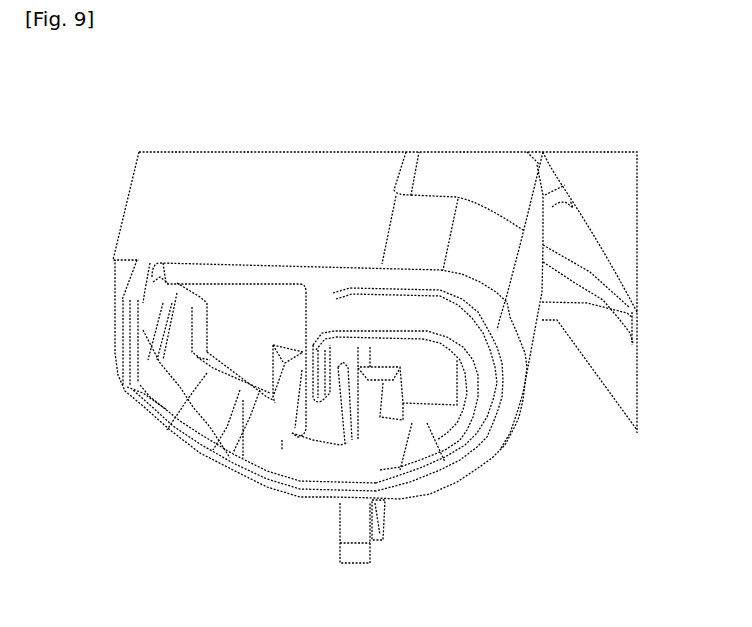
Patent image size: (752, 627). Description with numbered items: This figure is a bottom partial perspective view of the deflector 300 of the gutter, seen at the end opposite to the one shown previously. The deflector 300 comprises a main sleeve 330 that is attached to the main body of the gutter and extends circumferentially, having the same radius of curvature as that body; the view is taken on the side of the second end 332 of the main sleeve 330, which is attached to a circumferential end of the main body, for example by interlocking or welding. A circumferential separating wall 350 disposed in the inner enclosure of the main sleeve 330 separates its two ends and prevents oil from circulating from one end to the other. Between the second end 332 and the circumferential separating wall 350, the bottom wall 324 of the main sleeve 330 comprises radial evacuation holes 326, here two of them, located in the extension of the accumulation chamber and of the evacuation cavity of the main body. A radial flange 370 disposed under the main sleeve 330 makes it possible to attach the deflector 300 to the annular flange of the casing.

The deflector 300 is at (98, 188).
The main sleeve 330 is at (283, 183).
The circumferential separating wall 350 is at (233, 303).
The radial evacuation hole 326 is at (307, 406).
The second end 332 is at (246, 461).
The bottom wall 324 is at (300, 468).
The radial flange 370 is at (408, 541).